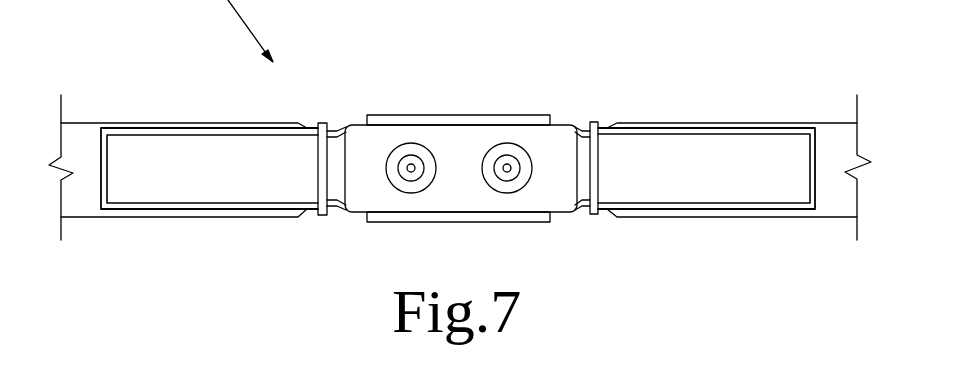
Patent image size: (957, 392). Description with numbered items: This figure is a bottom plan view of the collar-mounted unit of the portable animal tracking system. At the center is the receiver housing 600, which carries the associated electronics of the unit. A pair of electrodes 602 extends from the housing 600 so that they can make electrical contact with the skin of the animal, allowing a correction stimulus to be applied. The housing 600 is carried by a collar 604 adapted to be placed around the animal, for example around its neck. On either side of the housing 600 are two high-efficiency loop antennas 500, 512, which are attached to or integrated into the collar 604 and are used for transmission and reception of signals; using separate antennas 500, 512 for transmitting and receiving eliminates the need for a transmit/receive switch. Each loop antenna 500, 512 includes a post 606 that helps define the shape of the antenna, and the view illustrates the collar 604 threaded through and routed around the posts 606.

The loop antenna 500 is at (137, 209).
The loop antenna 512 is at (682, 130).
The receiver housing 600 is at (532, 118).
The electrodes 602 is at (507, 153).
The collar 604 is at (223, 190).
The post 606 is at (322, 123).